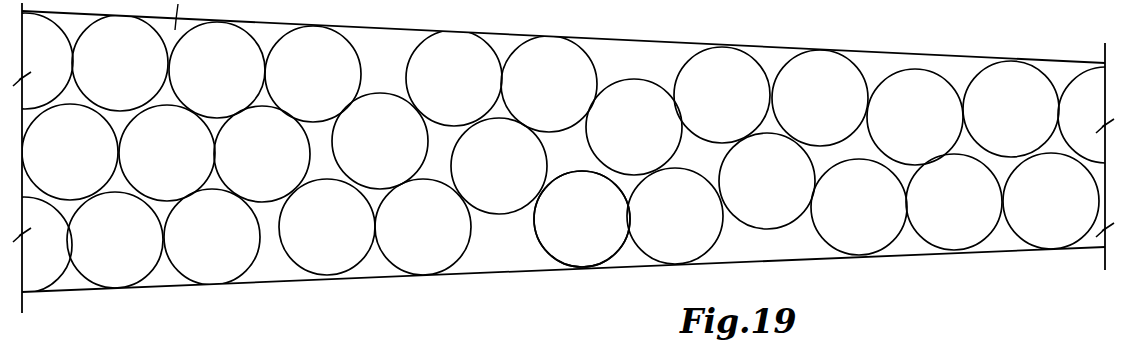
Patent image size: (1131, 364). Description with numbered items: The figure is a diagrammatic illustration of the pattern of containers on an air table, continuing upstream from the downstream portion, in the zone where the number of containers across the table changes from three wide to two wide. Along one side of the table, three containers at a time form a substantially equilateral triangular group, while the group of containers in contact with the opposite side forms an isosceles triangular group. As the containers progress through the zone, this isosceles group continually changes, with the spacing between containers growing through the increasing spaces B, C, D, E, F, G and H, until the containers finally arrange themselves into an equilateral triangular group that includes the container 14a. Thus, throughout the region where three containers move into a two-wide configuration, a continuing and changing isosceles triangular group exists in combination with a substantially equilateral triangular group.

The increasing space B is at (270, 257).
The increasing space C is at (390, 50).
The increasing space D is at (502, 248).
The increasing space E is at (637, 60).
The increasing space F is at (760, 247).
The increasing space G is at (922, 62).
The increasing space H is at (1003, 238).
The container of equilateral triangular group 14a is at (1095, 97).